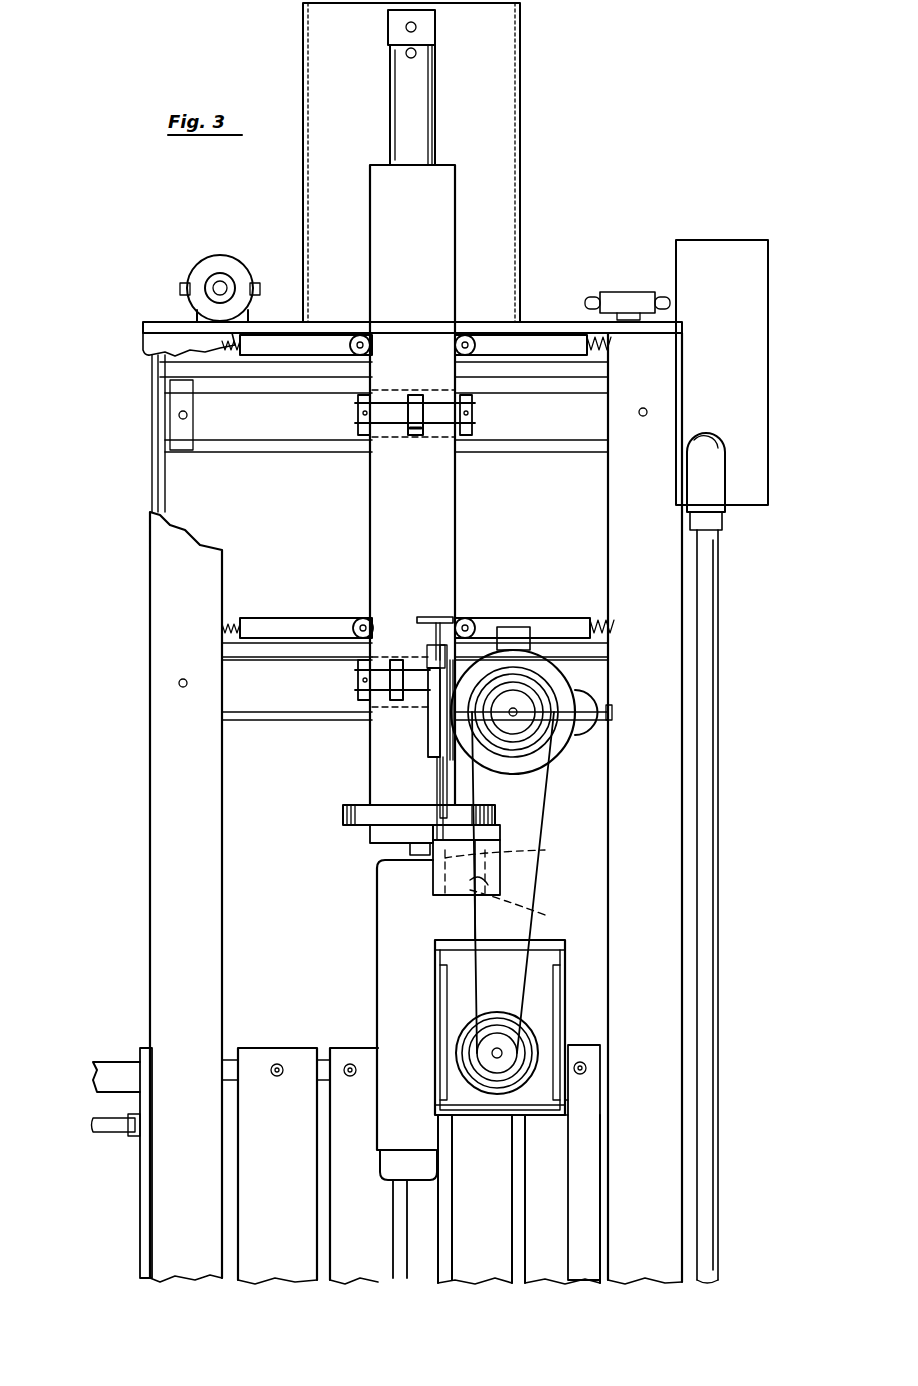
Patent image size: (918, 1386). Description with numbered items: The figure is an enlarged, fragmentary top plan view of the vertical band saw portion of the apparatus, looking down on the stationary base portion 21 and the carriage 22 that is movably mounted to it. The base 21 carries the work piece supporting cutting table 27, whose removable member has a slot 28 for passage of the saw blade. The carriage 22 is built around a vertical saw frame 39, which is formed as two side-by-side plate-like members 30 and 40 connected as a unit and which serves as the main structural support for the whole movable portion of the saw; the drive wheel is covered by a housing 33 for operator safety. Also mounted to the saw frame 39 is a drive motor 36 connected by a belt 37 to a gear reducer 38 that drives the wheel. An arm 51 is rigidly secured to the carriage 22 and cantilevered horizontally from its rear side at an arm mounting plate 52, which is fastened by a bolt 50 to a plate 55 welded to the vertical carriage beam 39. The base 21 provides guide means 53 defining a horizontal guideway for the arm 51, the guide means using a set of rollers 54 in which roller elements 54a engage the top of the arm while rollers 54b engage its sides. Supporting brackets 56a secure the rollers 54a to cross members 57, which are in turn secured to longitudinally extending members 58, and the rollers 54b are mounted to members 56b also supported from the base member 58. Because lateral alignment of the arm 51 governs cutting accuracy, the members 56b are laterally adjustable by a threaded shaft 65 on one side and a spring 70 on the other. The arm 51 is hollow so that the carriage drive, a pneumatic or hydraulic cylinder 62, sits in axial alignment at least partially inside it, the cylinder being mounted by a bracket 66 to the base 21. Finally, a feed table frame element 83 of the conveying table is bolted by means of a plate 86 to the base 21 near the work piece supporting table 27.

The stationary base portion 21 is at (130, 766).
The carriage 22 is at (360, 915).
The cutting table 27 is at (318, 1035).
The slot 28 is at (405, 1220).
The plate-like member 30 is at (505, 882).
The housing 33 is at (378, 975).
The drive motor 36 is at (570, 685).
The belt 37 is at (545, 788).
The gear reducer 38 is at (575, 992).
The vertical saw frame 39 is at (505, 880).
The plate-like member 40 is at (525, 907).
The bolt 50 is at (415, 855).
The arm 51 is at (455, 220).
The arm mounting plate 52 is at (343, 817).
The guide means 53 is at (358, 462).
The shaft 54 is at (422, 430).
The roller elements 54a is at (398, 700).
The rollers 54b is at (362, 335).
The plate 55 is at (370, 840).
The supporting brackets 56a is at (475, 430).
The members 56b is at (292, 335).
The cross members 57 is at (222, 452).
The longitudinally extending members 58 is at (162, 570).
The cylinder 62 is at (435, 95).
The threaded shaft 65 is at (230, 340).
The bracket 66 is at (500, 148).
The spring 70 is at (600, 345).
The feed table frame element 83 is at (120, 1068).
The plate 86 is at (142, 1180).